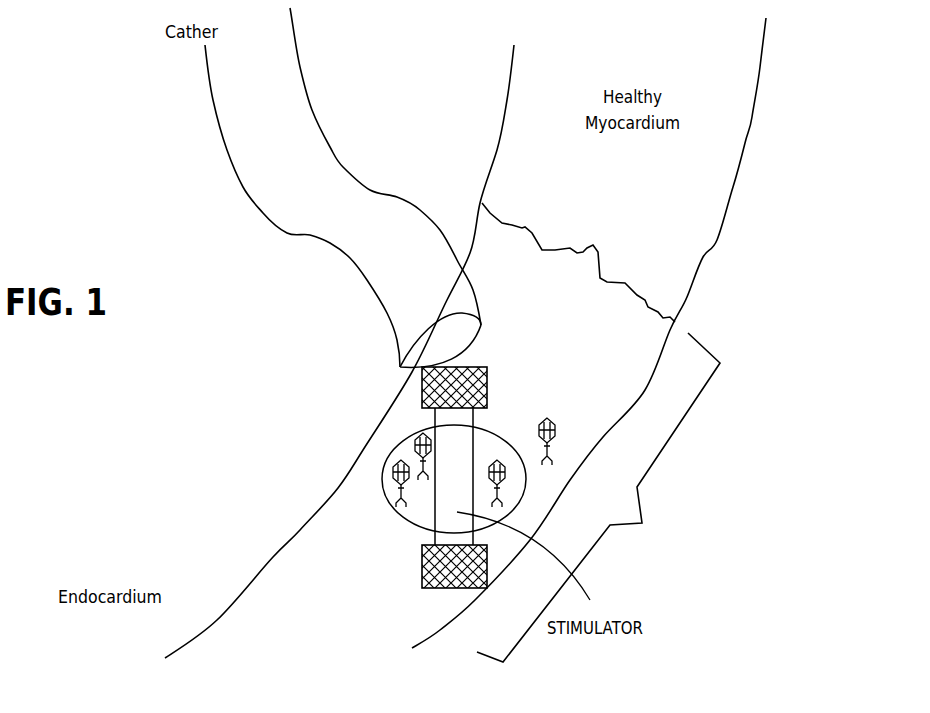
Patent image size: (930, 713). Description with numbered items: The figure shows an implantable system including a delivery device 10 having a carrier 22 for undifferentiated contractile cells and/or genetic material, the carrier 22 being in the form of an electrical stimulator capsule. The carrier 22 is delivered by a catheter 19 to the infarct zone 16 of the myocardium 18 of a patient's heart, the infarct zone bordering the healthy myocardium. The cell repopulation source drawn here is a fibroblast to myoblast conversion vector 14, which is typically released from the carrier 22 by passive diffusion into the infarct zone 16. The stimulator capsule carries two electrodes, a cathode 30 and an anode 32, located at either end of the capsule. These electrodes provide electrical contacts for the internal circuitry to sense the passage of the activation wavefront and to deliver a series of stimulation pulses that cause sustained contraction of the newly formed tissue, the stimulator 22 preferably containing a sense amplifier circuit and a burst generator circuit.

The delivery device 10 is at (276, 282).
The fibroblast to myoblast conversion vector 14 is at (392, 447).
The infarct zone 16 is at (598, 497).
The myocardium 18 is at (732, 143).
The catheter 19 is at (340, 182).
The carrier 22 is at (392, 401).
The cathode 30 is at (420, 565).
The anode 32 is at (487, 381).